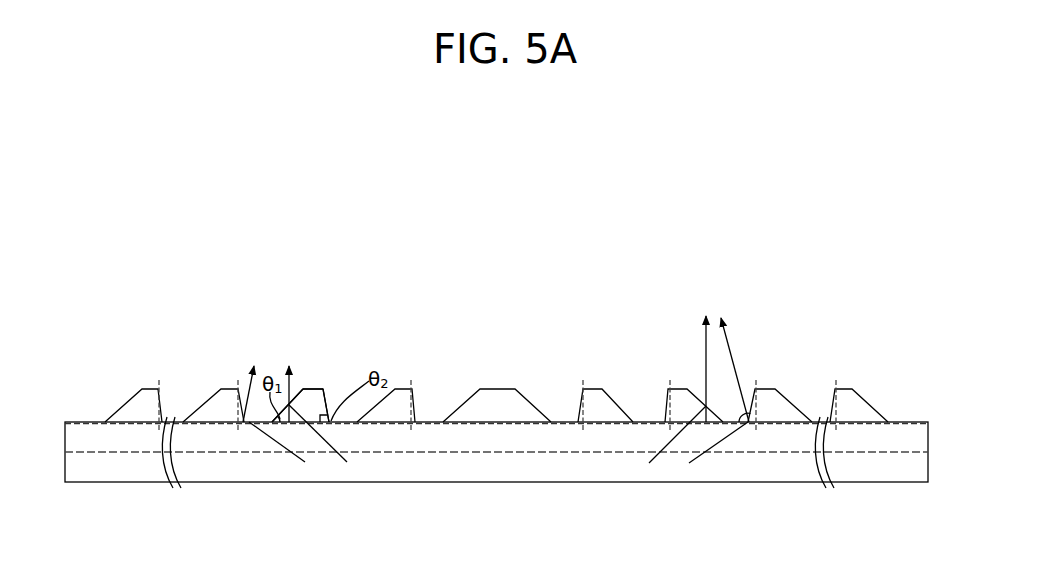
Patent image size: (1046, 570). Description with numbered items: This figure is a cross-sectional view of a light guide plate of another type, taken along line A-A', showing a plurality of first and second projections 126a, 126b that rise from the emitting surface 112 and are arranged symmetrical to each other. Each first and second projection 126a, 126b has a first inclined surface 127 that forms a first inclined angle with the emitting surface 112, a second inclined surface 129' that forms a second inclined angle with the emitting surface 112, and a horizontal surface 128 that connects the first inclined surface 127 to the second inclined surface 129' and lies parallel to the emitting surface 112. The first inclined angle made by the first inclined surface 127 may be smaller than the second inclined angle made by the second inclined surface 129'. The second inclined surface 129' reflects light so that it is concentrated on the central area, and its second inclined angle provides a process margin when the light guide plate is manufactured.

The emitting surface 112 is at (389, 423).
The first projection 126a is at (319, 405).
The second projection 126b is at (678, 397).
The first inclined surface 127 is at (303, 389).
The horizontal surface 128 is at (315, 389).
The second inclined surface 129' is at (348, 382).